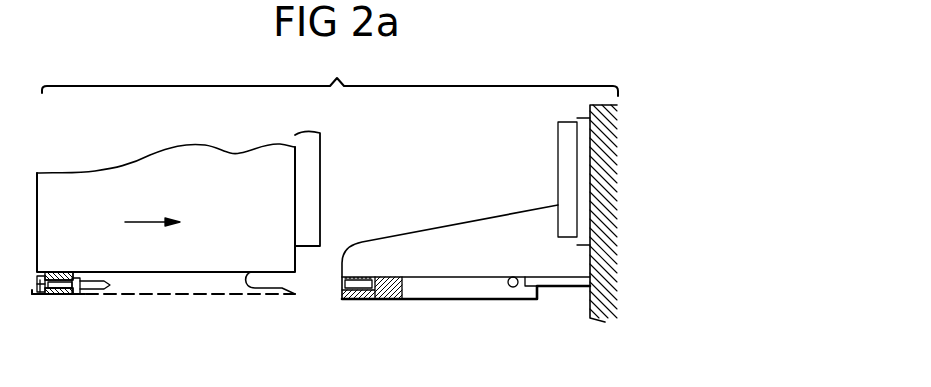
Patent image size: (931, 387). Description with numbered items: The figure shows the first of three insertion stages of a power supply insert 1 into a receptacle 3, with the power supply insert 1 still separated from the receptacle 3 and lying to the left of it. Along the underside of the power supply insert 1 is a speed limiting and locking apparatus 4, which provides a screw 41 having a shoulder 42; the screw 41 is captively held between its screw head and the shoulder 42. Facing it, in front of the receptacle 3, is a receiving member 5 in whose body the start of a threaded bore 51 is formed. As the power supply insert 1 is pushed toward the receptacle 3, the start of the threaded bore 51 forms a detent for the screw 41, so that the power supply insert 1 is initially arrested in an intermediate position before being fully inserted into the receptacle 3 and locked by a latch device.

The power supply insert 1 is at (138, 171).
The receptacle 3 is at (608, 155).
The base plate with coupling 4 is at (60, 308).
The screw 41 is at (37, 298).
The shoulder 42 is at (73, 297).
The receiving member 5 is at (434, 306).
The threaded bore 51 is at (356, 286).